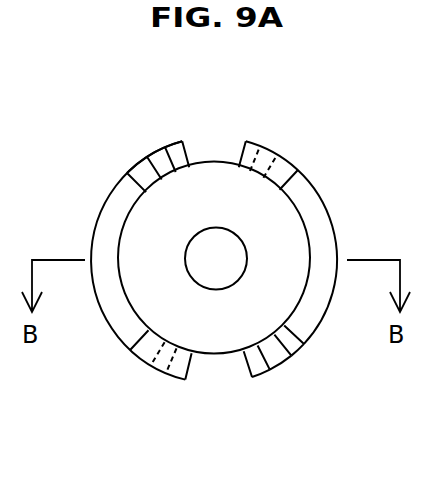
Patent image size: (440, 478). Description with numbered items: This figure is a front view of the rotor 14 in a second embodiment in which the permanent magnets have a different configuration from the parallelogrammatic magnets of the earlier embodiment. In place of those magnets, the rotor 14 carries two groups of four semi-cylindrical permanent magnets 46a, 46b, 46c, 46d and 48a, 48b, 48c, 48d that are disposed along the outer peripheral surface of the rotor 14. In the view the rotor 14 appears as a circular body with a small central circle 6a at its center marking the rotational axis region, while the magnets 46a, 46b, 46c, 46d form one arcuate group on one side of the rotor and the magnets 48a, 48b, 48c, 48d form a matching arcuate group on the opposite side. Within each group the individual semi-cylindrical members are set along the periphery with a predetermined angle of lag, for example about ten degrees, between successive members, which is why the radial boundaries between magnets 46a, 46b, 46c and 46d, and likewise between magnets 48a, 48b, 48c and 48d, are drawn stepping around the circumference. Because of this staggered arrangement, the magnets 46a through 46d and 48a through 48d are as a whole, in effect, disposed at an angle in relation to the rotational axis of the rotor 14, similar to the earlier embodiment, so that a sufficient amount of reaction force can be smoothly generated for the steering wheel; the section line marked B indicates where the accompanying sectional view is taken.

The rotary shaft 6a is at (216, 243).
The rotor 14 is at (213, 345).
The semi-cylindrical permanent magnet 46a is at (317, 213).
The semi-cylindrical permanent magnet 46b is at (298, 346).
The semi-cylindrical permanent magnet 46c is at (283, 362).
The semi-cylindrical permanent magnet 46d is at (262, 375).
The semi-cylindrical permanent magnet 48a is at (102, 238).
The semi-cylindrical permanent magnet 48b is at (137, 170).
The semi-cylindrical permanent magnet 48c is at (155, 162).
The semi-cylindrical permanent magnet 48d is at (177, 144).